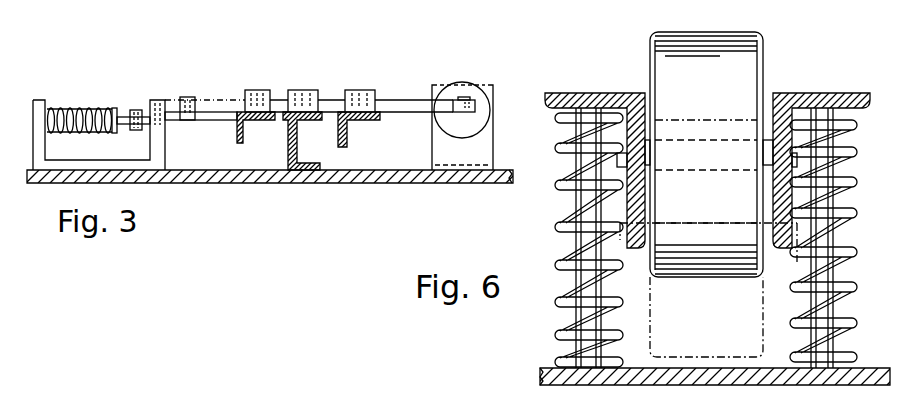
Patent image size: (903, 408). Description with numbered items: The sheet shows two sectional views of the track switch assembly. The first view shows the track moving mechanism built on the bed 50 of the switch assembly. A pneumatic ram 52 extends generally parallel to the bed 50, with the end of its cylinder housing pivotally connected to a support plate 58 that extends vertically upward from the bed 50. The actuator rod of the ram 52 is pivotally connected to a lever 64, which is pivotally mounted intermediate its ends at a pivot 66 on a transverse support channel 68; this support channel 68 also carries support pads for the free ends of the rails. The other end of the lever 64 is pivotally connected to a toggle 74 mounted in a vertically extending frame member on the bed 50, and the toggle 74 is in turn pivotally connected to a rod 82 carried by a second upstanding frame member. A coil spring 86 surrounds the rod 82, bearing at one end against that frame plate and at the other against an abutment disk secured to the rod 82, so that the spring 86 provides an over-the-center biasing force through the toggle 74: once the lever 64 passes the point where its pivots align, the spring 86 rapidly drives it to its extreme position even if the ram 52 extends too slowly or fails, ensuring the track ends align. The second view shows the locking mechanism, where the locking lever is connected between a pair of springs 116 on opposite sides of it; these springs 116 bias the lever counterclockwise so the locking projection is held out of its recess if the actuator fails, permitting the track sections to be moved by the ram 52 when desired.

In FIG. 3, the bed 50 is at (322, 183).
In FIG. 3, the pneumatic ram 52 is at (460, 83).
In FIG. 3, the support plate 58 is at (433, 145).
In FIG. 3, the lever 64 is at (408, 107).
In FIG. 3, the pivot 66 is at (304, 90).
In FIG. 3, the transverse support channel 68 is at (288, 143).
In FIG. 3, the toggle 74 is at (172, 120).
In FIG. 3, the rod 82 is at (125, 112).
In FIG. 3, the coil spring 86 is at (78, 106).
In FIG. 6, the springs 116 is at (555, 335).